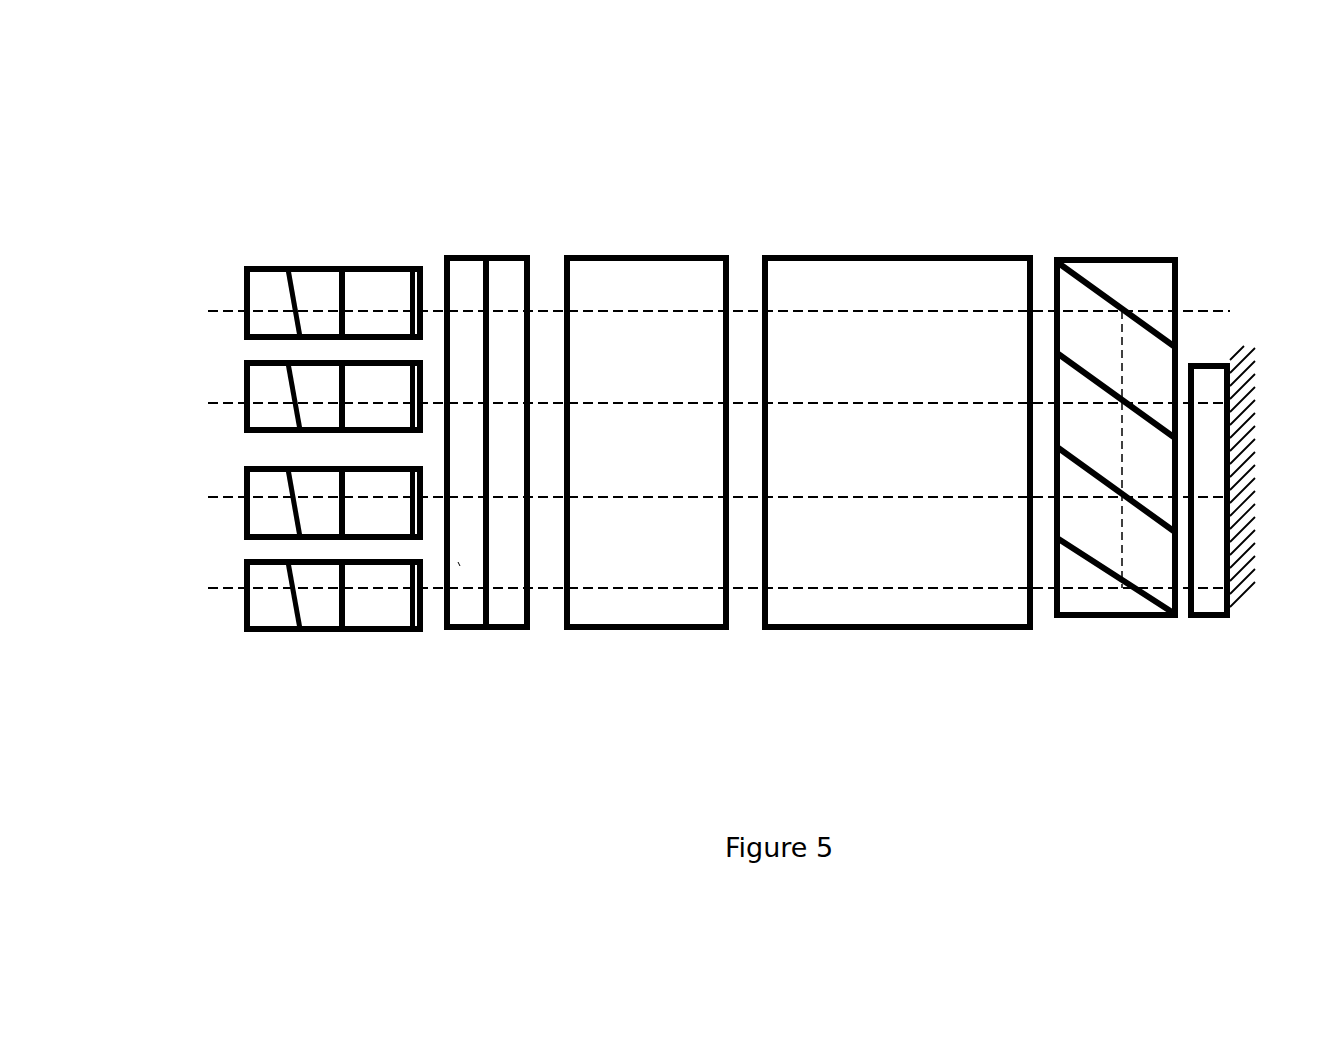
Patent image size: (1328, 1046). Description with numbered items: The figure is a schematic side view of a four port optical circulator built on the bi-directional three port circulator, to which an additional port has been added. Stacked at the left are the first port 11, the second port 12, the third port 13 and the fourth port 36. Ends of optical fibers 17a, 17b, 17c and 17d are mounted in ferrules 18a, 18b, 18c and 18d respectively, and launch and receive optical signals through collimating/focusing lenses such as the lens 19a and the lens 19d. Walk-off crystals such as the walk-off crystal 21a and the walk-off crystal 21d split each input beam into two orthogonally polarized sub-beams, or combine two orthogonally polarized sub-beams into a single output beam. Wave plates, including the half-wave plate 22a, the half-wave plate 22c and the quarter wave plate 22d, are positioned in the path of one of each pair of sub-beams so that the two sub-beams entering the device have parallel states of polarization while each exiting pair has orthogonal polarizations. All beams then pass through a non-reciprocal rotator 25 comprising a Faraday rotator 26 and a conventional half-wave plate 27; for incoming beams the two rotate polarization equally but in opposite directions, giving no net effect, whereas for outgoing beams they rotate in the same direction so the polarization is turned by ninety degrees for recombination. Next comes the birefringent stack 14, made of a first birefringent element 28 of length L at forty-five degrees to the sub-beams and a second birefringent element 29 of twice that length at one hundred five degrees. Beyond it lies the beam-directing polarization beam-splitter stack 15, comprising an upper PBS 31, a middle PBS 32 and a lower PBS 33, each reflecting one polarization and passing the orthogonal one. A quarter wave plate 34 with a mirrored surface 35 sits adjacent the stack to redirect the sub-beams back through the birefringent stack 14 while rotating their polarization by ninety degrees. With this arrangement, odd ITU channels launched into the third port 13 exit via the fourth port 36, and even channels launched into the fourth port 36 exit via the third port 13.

The first port 11 is at (205, 195).
The second port 12 is at (165, 341).
The third port 13 is at (173, 587).
The fourth port 36 is at (213, 705).
The birefringent stack 14 is at (728, 197).
The beam-directing polarization beam-splitter stack 15 is at (1074, 197).
The optical fiber 17a is at (235, 308).
The optical fiber 17b is at (228, 400).
The optical fiber 17c is at (222, 498).
The fiber 17d is at (232, 588).
The ferrule 18a is at (272, 282).
The ferrule 18b is at (275, 412).
The ferrule 18c is at (275, 485).
The ferrule 18d is at (272, 615).
The collimating/focusing lens 19a is at (313, 283).
The lens 19d is at (313, 632).
The walk-off crystal 21a is at (380, 283).
The walk-off crystal 21d is at (378, 632).
The half-wave plate 22a is at (407, 277).
The half-wave plate 22c is at (458, 562).
The quarter wave plate 22d is at (412, 632).
The non-reciprocal rotator 25 is at (516, 192).
The Faraday rotator 26 is at (473, 255).
The half-wave plate 27 is at (523, 642).
The first birefringent element 28 is at (657, 615).
The second birefringent element 29 is at (895, 602).
The upper PBS 31 is at (1163, 255).
The middle PBS 32 is at (1148, 378).
The lower PBS 33 is at (1080, 630).
The quarter wave plate 34 is at (1197, 630).
The mirrored surface 35 is at (1250, 590).